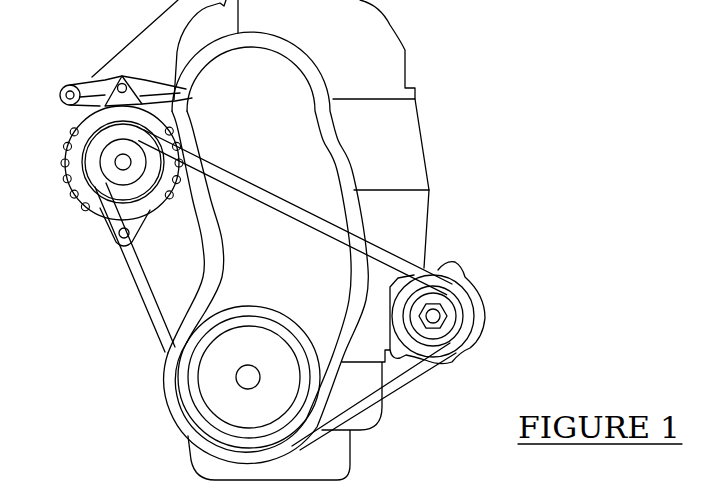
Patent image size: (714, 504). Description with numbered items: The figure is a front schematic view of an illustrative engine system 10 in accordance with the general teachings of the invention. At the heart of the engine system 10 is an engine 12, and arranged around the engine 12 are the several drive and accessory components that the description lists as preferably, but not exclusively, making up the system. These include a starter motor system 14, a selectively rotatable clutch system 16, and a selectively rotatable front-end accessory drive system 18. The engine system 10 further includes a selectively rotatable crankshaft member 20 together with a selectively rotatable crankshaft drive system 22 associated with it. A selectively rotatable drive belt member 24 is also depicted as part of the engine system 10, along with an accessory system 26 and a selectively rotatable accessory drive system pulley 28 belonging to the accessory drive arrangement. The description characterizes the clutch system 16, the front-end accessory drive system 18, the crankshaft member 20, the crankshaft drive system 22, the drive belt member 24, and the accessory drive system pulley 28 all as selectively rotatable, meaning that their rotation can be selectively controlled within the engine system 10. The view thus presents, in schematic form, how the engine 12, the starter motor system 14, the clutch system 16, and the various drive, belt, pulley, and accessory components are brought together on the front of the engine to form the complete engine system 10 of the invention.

The engine system 10 is at (455, 162).
The engine 12 is at (293, 83).
The starter motor system 14 is at (478, 298).
The selectively rotatable clutch system 16 is at (450, 343).
The selectively rotatable front-end accessory drive system 18 is at (448, 316).
The selectively rotatable crankshaft member 20 is at (240, 383).
The selectively rotatable crankshaft drive system 22 is at (170, 410).
The selectively rotatable drive belt member 24 is at (130, 296).
The accessory system 26 is at (90, 208).
The selectively rotatable accessory drive system pulley 28 is at (93, 128).